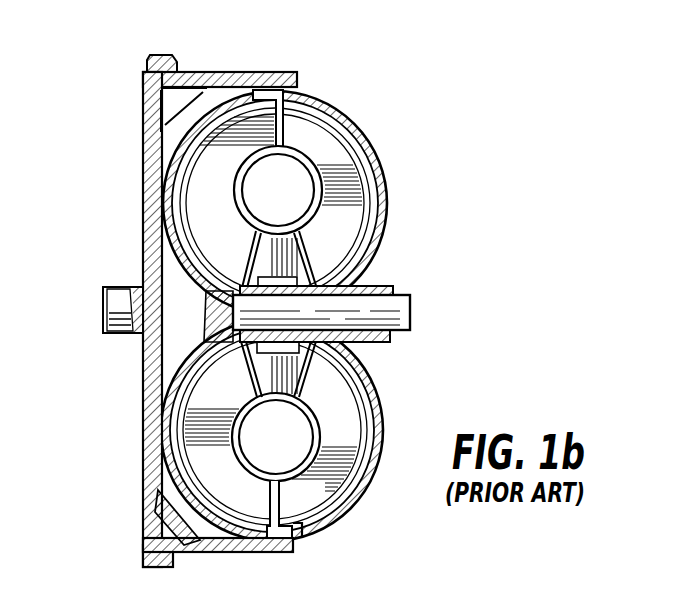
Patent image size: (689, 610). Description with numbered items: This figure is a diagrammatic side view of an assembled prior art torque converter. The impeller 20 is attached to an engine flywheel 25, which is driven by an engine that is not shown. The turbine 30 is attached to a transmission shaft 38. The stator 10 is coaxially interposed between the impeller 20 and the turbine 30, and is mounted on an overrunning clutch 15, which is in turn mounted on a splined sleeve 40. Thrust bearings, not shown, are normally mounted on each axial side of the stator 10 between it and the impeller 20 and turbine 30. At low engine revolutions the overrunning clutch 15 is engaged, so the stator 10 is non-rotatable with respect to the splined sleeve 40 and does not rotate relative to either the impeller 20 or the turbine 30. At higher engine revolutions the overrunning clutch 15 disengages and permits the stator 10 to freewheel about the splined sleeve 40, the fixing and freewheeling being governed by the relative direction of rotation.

The stator 10 is at (300, 262).
The overrunning clutch 15 is at (256, 372).
The impeller 20 is at (384, 171).
The engine flywheel 25 is at (148, 132).
The turbine 30 is at (272, 88).
The transmission shaft 38 is at (411, 312).
The splined sleeve 40 is at (410, 281).